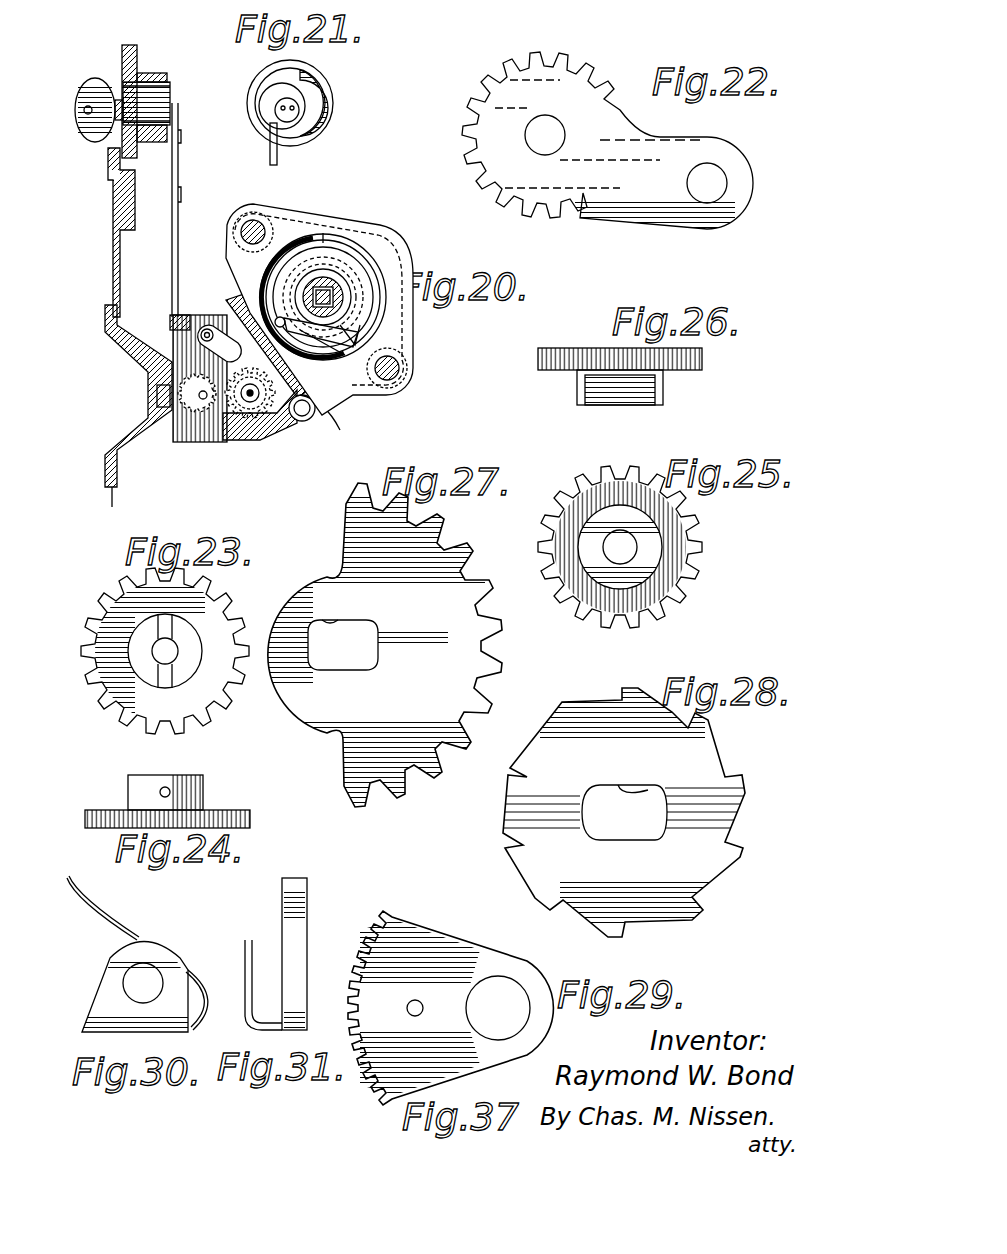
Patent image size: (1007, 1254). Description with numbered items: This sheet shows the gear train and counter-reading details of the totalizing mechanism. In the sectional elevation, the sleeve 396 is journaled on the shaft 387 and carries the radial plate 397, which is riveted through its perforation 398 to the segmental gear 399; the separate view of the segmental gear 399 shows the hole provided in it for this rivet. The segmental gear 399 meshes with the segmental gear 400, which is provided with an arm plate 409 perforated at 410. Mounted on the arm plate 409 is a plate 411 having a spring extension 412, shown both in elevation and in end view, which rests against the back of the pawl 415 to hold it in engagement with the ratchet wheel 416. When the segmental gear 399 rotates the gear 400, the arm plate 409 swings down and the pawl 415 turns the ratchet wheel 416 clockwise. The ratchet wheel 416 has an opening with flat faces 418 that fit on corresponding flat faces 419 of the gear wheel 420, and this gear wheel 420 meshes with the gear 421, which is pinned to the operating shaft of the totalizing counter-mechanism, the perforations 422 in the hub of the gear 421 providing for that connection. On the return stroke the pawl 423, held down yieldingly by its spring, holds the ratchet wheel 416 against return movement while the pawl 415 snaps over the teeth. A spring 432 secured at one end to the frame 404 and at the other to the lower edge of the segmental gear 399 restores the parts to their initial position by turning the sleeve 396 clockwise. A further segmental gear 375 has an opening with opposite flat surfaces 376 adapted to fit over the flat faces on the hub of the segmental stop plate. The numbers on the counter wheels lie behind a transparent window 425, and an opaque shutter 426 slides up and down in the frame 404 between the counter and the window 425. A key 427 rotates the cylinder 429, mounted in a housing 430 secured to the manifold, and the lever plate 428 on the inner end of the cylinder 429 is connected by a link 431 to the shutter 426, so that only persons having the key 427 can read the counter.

In FIG. 27, the segmental gear 375 is at (428, 560).
In FIG. 27, the opposite flat surfaces 376 is at (360, 622).
In FIG. 20, the shaft 387 is at (330, 275).
In FIG. 20, the sleeve 396 is at (345, 285).
In FIG. 20, the radial plate 397 is at (330, 345).
In FIG. 20, the perforation 398 is at (323, 240).
In FIG. 20, the segmental gear 399 is at (240, 300).
In FIG. 29, the segmental gear 399 is at (415, 960).
In FIG. 20, the segmental gear 400 is at (232, 445).
In FIG. 22, the segmental gear 400 is at (552, 83).
In FIG. 20, the frame 404 is at (385, 250).
In FIG. 20, the arm plate 409 is at (262, 425).
In FIG. 22, the arm plate 409 is at (628, 205).
In FIG. 22, the perforation 410 is at (716, 200).
In FIG. 30, the plate 411 is at (175, 985).
In FIG. 31, the plate 411 is at (248, 945).
In FIG. 20, the spring extension 412 is at (318, 425).
In FIG. 30, the spring extension 412 is at (118, 930).
In FIG. 31, the spring extension 412 is at (305, 915).
In FIG. 20, the pawl 415 is at (306, 440).
In FIG. 28, the ratchet wheel 416 is at (735, 790).
In FIG. 28, the flat faces 418 is at (650, 790).
In FIG. 26, the flat faces 419 is at (620, 400).
In FIG. 25, the flat faces 419 is at (640, 592).
In FIG. 26, the gear wheel 420 is at (548, 348).
In FIG. 25, the gear wheel 420 is at (700, 535).
In FIG. 20, the gear 421 is at (190, 442).
In FIG. 23, the gear 421 is at (95, 605).
In FIG. 24, the gear 421 is at (92, 810).
In FIG. 23, the perforations 422 is at (170, 645).
In FIG. 24, the perforations 422 is at (170, 790).
In FIG. 20, the pawl 423 is at (200, 345).
In FIG. 20, the transparent window 425 is at (155, 395).
In FIG. 20, the shutter 426 is at (172, 228).
In FIG. 20, the key 427 is at (95, 95).
In FIG. 20, the lever plate 428 is at (166, 100).
In FIG. 21, the lever plate 428 is at (284, 130).
In FIG. 20, the cylinder 429 is at (150, 95).
In FIG. 21, the cylinder 429 is at (330, 90).
In FIG. 20, the housing 430 is at (152, 75).
In FIG. 21, the housing 430 is at (312, 112).
In FIG. 20, the link 431 is at (178, 160).
In FIG. 21, the link 431 is at (270, 150).
In FIG. 20, the spring 432 is at (360, 310).